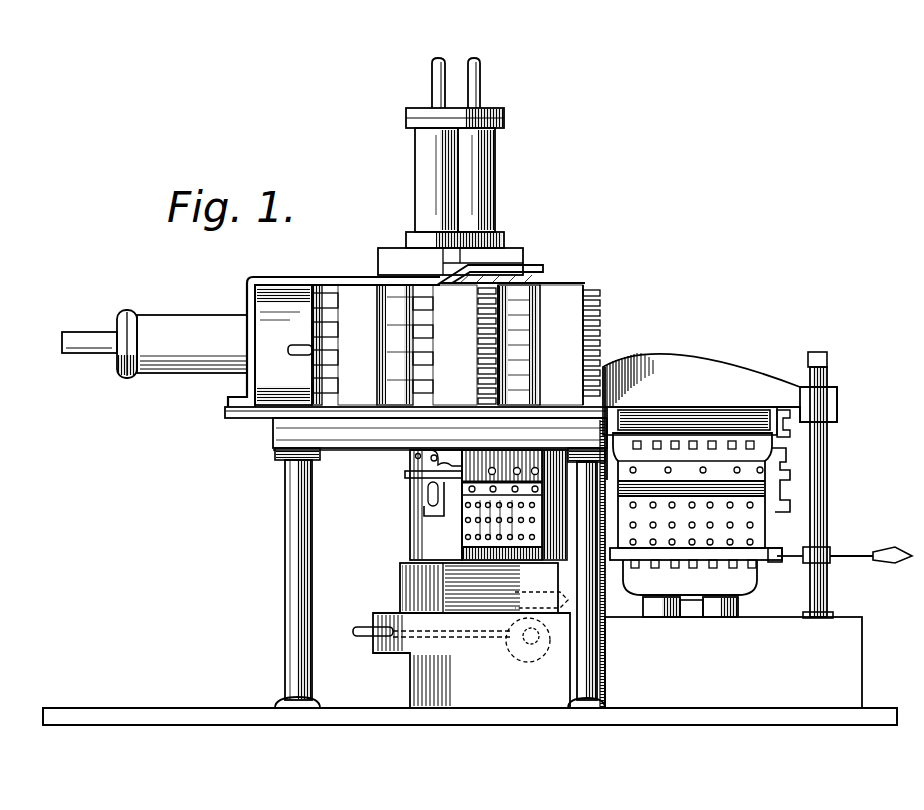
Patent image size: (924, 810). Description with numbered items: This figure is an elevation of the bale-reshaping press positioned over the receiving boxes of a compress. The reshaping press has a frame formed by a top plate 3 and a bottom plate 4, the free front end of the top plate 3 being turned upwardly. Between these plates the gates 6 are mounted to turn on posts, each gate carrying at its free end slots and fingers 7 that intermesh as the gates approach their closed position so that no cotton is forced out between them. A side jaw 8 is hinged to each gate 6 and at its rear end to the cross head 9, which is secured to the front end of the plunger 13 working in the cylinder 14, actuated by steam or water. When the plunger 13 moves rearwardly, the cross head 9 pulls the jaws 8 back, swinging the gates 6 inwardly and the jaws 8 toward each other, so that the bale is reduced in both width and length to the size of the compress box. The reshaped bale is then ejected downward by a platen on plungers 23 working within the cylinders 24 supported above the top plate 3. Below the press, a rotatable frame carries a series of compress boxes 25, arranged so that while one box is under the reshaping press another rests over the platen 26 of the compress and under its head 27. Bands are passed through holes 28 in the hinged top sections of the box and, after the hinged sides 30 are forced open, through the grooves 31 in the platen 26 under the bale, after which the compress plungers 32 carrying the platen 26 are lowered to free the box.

The top plate 3 is at (349, 281).
The bottom plate 4 is at (370, 420).
The gates 6 is at (508, 345).
The fingers 7 is at (480, 347).
The side jaw 8 is at (513, 300).
The cross head 9 is at (312, 333).
The plunger 13 is at (296, 357).
The cylinder 14 is at (154, 344).
The plungers 23 is at (472, 64).
The cylinders 24 is at (440, 188).
The compress boxes 25 is at (706, 526).
The platen 26 is at (690, 577).
The head 27 is at (720, 387).
The holes 28 is at (698, 433).
The hinged sides 30 is at (752, 458).
The grooves 31 is at (745, 568).
The compress plungers 32 is at (715, 616).